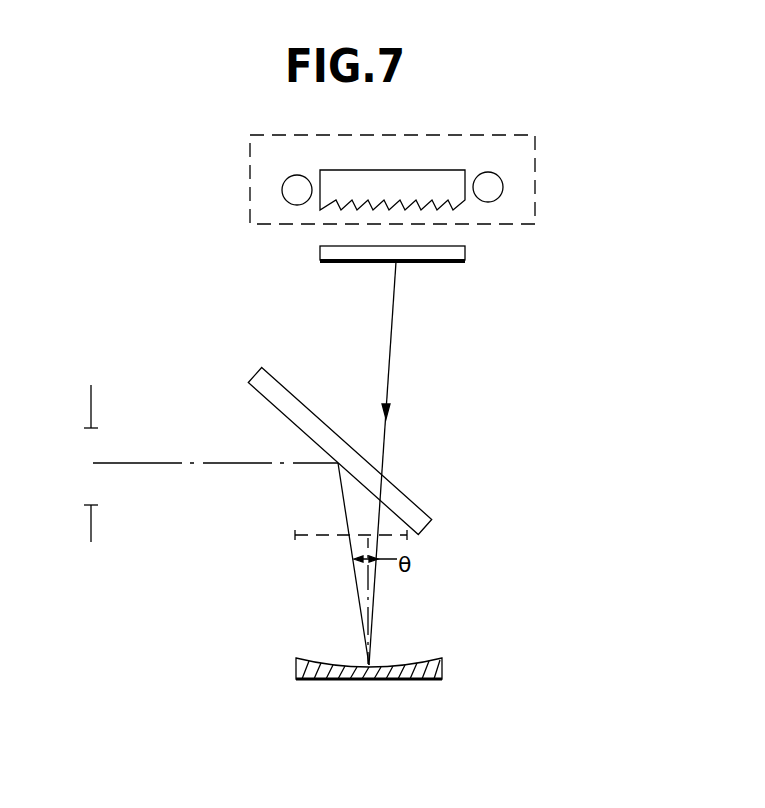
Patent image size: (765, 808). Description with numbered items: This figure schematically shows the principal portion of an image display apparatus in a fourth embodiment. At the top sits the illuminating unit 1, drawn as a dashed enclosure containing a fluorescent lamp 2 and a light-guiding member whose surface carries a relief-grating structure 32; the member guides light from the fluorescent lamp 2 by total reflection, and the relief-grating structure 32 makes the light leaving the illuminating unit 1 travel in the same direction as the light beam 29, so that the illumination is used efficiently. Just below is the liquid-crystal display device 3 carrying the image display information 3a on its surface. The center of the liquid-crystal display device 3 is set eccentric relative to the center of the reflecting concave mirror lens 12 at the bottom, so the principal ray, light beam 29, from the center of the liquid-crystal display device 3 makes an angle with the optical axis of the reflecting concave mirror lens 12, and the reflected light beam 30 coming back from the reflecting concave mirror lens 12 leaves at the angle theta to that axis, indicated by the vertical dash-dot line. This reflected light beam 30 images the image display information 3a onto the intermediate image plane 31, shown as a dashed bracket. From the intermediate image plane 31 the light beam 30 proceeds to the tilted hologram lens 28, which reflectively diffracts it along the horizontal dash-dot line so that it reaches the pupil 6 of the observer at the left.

The illuminating unit 1 is at (535, 152).
The fluorescent lamp 2 is at (495, 189).
The relief-grating structure 32 is at (453, 203).
The liquid-crystal display device 3 is at (465, 255).
The image display information 3a is at (427, 262).
The principal ray (light beam) 29 is at (392, 355).
The hologram lens 28 is at (257, 372).
The pupil 6 is at (98, 408).
The intermediate image plane 31 is at (300, 528).
The reflected light beam 30 is at (350, 550).
The reflecting concave mirror lens 12 is at (442, 660).